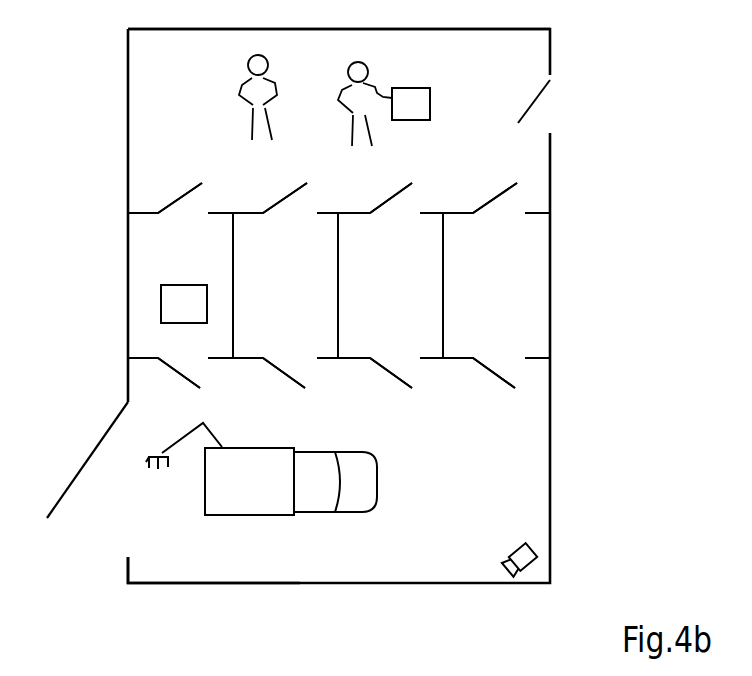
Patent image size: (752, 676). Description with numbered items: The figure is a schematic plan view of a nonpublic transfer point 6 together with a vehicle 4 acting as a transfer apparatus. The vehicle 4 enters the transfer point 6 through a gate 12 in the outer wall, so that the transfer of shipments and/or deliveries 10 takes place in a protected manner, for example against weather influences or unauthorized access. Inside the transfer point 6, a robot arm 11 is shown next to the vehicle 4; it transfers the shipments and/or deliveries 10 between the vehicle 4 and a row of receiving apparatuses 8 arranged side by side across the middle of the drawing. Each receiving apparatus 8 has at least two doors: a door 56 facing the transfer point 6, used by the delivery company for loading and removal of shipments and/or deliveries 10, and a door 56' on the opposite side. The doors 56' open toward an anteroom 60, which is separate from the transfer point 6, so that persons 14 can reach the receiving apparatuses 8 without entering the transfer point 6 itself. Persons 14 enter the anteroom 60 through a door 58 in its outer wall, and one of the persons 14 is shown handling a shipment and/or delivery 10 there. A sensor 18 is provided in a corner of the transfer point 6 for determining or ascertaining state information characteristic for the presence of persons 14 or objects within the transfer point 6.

The anteroom 60 is at (100, 110).
The door 58 is at (535, 102).
The persons 14 is at (269, 65).
The shipments and/or deliveries 10 is at (430, 104).
The door 56' is at (325, 187).
The receiving apparatuses 8 is at (175, 264).
The doors 56 is at (334, 393).
The gate 12 is at (82, 465).
The robot arm 11 is at (168, 442).
The vehicle 4 is at (253, 538).
The transfer point 6 is at (82, 562).
The sensor 18 is at (530, 553).